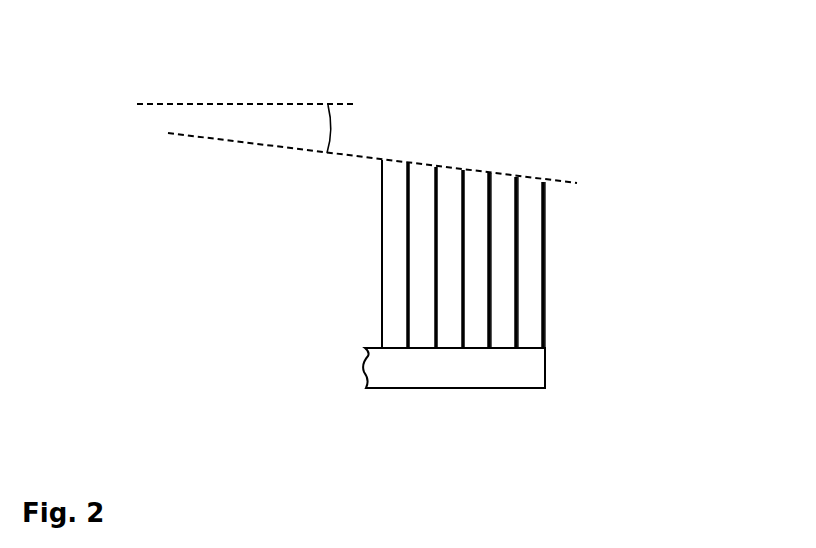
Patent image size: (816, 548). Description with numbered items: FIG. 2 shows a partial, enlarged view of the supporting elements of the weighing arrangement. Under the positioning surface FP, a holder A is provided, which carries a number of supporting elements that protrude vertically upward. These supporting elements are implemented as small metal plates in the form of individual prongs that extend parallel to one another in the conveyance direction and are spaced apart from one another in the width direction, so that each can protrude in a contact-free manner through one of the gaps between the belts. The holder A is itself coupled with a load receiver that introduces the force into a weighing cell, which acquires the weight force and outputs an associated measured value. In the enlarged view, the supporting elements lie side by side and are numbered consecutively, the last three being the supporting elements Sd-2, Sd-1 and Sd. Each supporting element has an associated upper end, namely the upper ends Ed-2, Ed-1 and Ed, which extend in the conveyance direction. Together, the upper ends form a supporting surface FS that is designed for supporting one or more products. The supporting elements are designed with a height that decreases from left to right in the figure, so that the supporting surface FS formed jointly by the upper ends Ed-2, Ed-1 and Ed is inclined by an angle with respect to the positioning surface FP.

The positioning surface FP is at (190, 103).
The supporting surface FS is at (210, 137).
The upper end of supporting element d-2 Ed-2 is at (484, 166).
The upper end of supporting element d-1 Ed-1 is at (521, 165).
The upper end of supporting element d Ed is at (553, 166).
The supporting element d Sd is at (547, 220).
The supporting element d-1 Sd-1 is at (520, 273).
The supporting element d-2 Sd-2 is at (493, 342).
The holder A is at (457, 378).